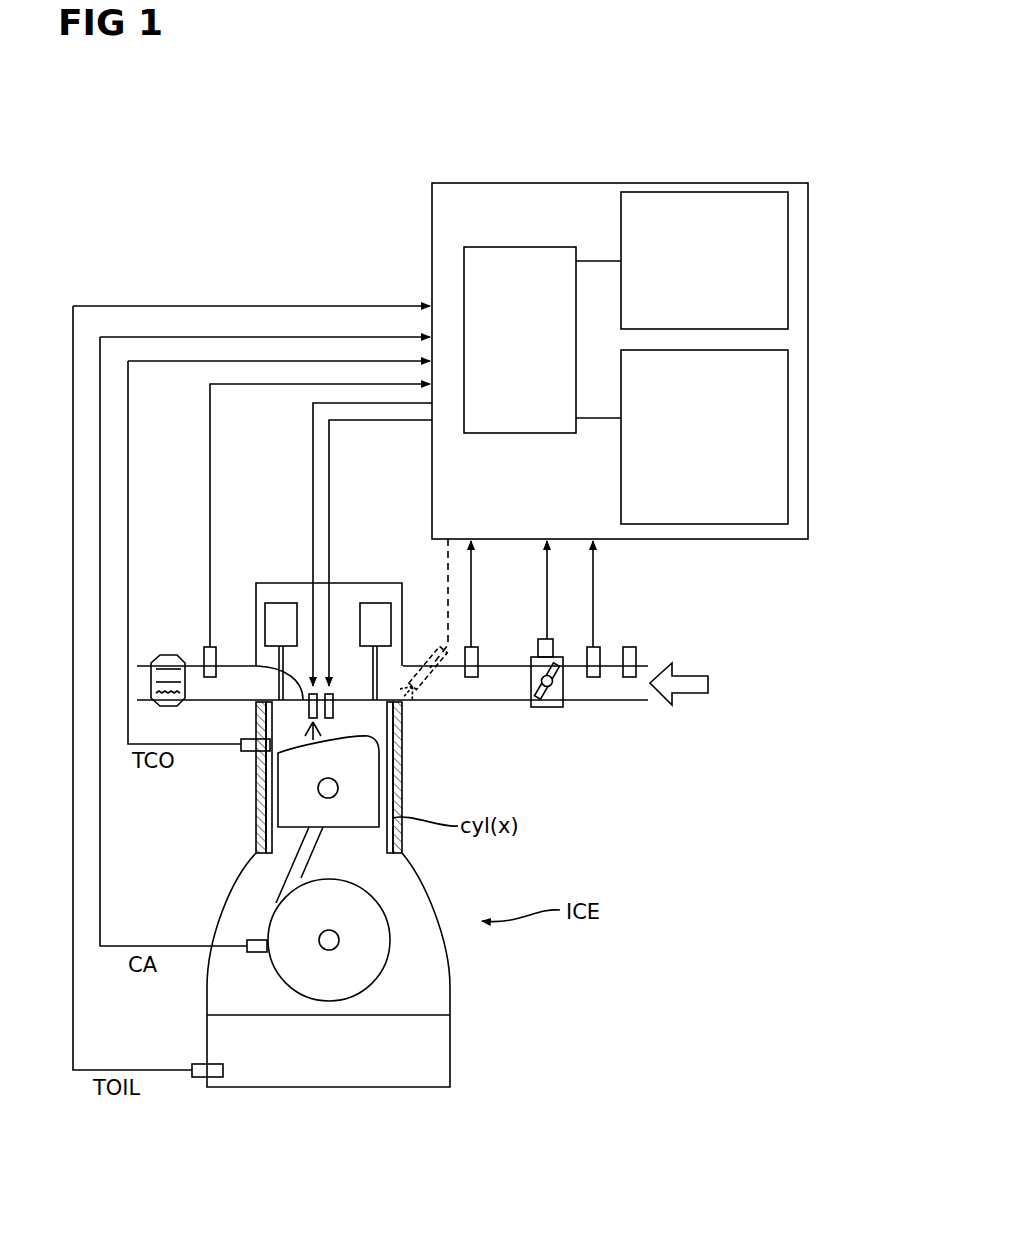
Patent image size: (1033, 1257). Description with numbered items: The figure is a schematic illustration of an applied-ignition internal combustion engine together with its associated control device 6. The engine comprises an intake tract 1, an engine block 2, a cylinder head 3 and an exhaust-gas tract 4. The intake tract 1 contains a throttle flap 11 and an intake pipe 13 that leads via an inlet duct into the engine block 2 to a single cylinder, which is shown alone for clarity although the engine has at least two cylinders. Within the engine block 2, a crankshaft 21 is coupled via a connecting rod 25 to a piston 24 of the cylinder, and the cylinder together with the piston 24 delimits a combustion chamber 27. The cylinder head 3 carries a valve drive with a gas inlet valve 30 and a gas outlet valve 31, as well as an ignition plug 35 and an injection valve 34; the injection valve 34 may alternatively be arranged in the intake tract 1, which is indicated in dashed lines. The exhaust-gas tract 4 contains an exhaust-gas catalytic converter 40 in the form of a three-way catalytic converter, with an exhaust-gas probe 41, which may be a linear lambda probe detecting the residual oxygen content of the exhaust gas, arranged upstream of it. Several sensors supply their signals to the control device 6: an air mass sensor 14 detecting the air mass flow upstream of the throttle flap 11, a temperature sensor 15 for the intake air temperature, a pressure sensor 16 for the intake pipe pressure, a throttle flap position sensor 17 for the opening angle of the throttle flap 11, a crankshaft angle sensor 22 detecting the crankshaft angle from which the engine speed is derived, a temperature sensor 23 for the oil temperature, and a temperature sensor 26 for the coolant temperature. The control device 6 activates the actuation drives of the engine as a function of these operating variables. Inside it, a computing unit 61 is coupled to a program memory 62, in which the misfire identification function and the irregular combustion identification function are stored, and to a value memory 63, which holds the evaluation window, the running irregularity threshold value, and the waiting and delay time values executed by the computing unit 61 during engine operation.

The intake tract 1 is at (558, 720).
The engine block 2 is at (238, 797).
The cylinder head 3 is at (348, 566).
The exhaust-gas tract 4 is at (233, 680).
The control device 6 is at (473, 178).
The throttle flap 11 is at (548, 708).
The intake pipe 13 is at (510, 690).
The air mass sensor 14 is at (633, 650).
The temperature sensor 15 is at (598, 650).
The pressure sensor 16 is at (480, 650).
The throttle flap position sensor 17 is at (556, 650).
The crankshaft 21 is at (335, 945).
The crankshaft angle sensor 22 is at (247, 942).
The temperature sensor 23 is at (200, 1080).
The piston 24 is at (292, 817).
The connecting rod 25 is at (318, 853).
The temperature sensor 26 is at (243, 752).
The combustion chamber 27 is at (286, 722).
The gas inlet valve 30 is at (378, 612).
The gas outlet valve 31 is at (272, 612).
The injection valve 34 is at (306, 690).
The ignition plug 35 is at (335, 690).
The exhaust-gas catalytic converter 40 is at (170, 652).
The exhaust-gas probe 41 is at (207, 652).
The computing unit 61 is at (546, 268).
The program memory 62 is at (753, 200).
The value memory 63 is at (754, 520).